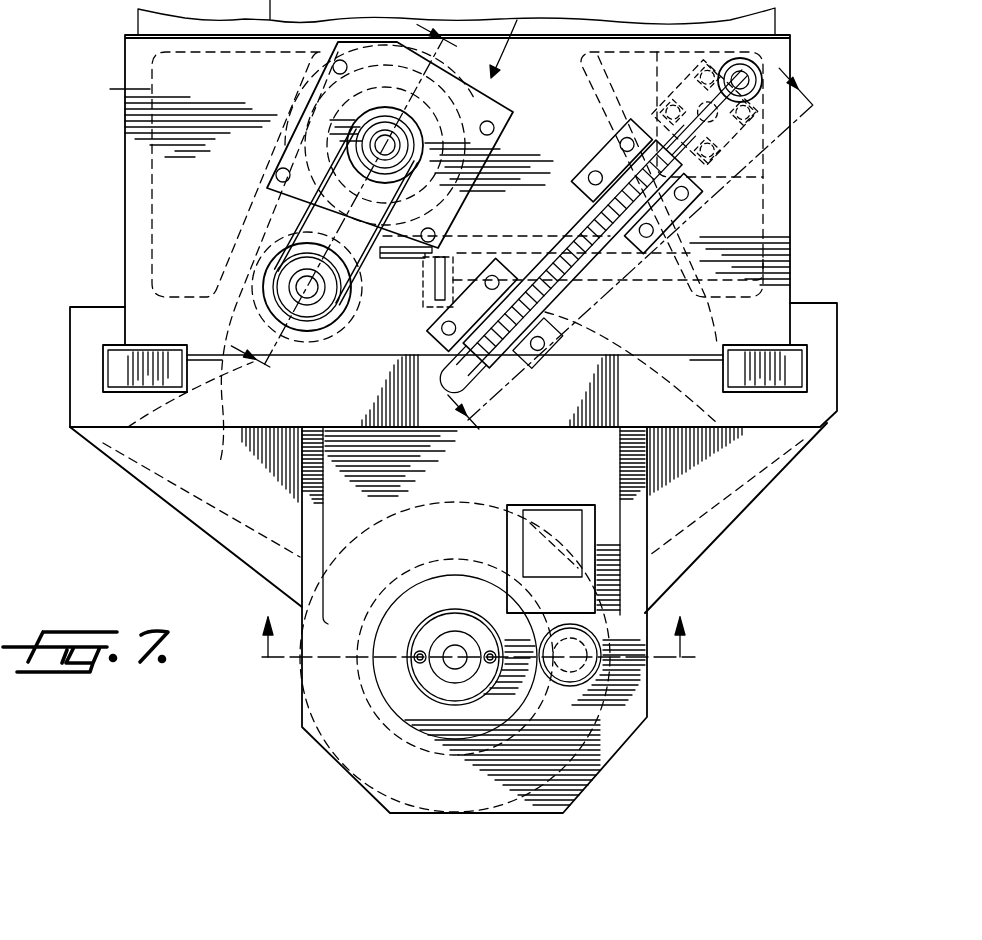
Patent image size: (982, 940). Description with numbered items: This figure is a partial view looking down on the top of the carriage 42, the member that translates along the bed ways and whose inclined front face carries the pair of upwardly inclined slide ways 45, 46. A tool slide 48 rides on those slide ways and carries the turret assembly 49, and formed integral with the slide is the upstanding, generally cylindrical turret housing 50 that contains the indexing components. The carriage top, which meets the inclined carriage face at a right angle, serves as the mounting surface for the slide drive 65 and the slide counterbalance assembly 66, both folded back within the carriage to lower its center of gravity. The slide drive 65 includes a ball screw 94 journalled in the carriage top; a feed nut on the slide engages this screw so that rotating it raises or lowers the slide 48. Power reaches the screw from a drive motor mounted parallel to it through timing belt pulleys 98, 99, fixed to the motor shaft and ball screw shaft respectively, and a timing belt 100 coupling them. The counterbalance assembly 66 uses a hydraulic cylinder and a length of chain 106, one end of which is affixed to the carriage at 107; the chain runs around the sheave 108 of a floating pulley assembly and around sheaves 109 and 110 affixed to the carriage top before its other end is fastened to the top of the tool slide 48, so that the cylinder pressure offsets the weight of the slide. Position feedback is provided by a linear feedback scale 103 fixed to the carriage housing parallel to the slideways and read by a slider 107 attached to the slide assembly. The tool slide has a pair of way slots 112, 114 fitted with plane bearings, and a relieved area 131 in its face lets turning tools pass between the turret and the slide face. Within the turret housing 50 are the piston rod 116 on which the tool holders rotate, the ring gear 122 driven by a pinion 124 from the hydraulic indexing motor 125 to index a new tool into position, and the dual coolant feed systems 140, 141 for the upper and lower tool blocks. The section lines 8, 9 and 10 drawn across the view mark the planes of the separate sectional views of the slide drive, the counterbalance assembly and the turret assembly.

The section line 8- 8 is at (346, 204).
The section line 9- 9 is at (629, 267).
The section line 10- 10 is at (466, 657).
The carriage 42 is at (128, 102).
The slide way 45 is at (113, 380).
The slide way 46 is at (793, 363).
The tool slide 48 is at (153, 430).
The turret assembly 49 is at (242, 583).
The turret housing 50 is at (303, 728).
The slide drive 65 is at (507, 39).
The slide counterbalance assembly 66 is at (575, 167).
The ball screw 94 is at (318, 352).
The timing belt pulley 98 is at (345, 158).
The timing belt pulley 99 is at (362, 302).
The timing belt 100 is at (285, 253).
The linear feedback scale 103 is at (452, 212).
The chain 106 is at (580, 228).
The slider 107 is at (760, 75).
The sheave 108 is at (672, 102).
The sheave 109 is at (672, 210).
The sheave 110 is at (500, 368).
The way slot 112 is at (148, 386).
The way slot 114 is at (787, 380).
The piston rod 116 is at (428, 632).
The ring gear 122 is at (620, 707).
The pinion 124 is at (345, 765).
The hydraulic indexing motor 125 is at (645, 617).
The relieved area 131 is at (228, 427).
The coolant feed system 140 is at (403, 672).
The coolant feed system 141 is at (522, 704).